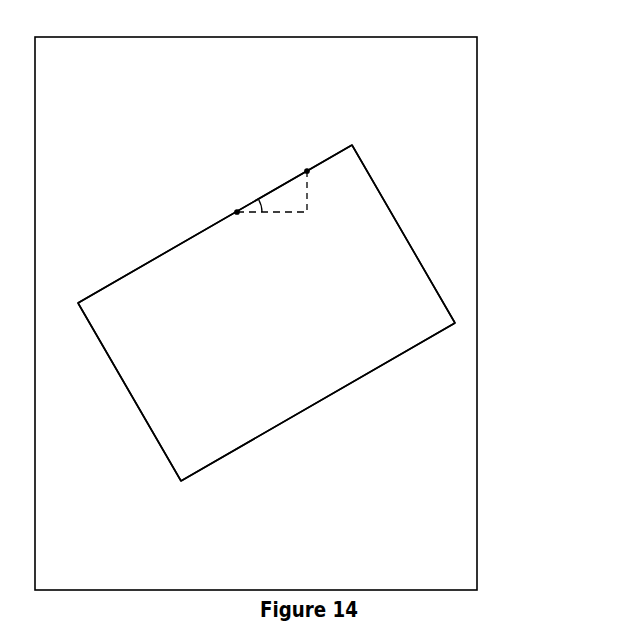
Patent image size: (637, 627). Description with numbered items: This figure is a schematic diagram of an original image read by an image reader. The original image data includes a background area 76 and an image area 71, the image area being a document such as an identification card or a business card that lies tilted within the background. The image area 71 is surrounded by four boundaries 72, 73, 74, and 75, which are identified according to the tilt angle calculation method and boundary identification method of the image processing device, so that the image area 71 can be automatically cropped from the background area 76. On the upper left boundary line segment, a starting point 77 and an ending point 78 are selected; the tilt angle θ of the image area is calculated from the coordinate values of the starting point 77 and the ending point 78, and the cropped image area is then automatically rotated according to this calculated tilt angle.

The image area 71 is at (363, 218).
The boundary 72 is at (443, 300).
The boundary 73 is at (265, 430).
The boundary 74 is at (148, 428).
The boundary 75 is at (142, 266).
The background area 76 is at (467, 525).
The starting point 77 is at (237, 211).
The ending point 78 is at (307, 171).